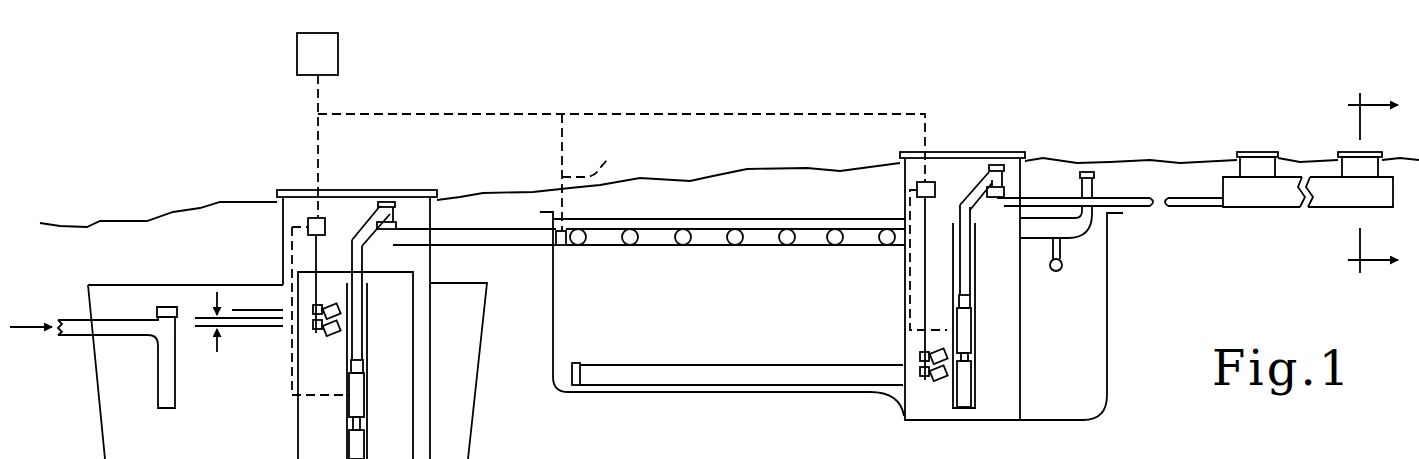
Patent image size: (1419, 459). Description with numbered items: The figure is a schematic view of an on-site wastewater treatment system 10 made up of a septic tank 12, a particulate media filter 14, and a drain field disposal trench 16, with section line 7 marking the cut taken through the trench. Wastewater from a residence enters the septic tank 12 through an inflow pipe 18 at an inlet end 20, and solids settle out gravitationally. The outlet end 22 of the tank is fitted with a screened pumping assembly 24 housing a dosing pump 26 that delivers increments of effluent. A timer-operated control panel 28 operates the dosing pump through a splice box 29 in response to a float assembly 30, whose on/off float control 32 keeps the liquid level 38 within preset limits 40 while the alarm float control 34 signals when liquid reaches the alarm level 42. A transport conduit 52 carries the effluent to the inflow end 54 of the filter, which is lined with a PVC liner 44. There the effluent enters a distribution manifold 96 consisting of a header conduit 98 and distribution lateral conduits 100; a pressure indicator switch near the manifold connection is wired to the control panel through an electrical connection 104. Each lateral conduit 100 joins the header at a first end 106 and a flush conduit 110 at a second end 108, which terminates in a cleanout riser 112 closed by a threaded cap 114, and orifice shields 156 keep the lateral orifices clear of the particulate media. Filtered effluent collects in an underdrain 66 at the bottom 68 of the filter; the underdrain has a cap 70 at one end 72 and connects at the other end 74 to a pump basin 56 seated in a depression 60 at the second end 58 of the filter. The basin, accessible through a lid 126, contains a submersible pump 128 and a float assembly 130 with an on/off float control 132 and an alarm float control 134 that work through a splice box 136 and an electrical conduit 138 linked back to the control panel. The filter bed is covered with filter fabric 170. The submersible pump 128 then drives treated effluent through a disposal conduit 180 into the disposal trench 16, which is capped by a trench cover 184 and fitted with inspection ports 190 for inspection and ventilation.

The section line 7- 7 is at (1364, 183).
The on-site wastewater treatment system 10 is at (512, 87).
The septic tank 12 is at (205, 195).
The particulate media filter 14 is at (712, 167).
The drain field disposal trench 16 is at (1265, 135).
The inflow pipe 18 is at (82, 335).
The inlet end 20 is at (88, 305).
The outlet end 22 is at (437, 283).
The screened pumping assembly 24 is at (430, 387).
The dosing pump 26 is at (360, 390).
The control panel 28 is at (338, 70).
The splice box 29 is at (328, 222).
The float assembly 30 is at (308, 230).
The on/off float control 32 is at (318, 332).
The alarm float control 34 is at (328, 318).
The liquid level 38 is at (198, 316).
The preset limits 40 is at (217, 340).
The alarm level 42 is at (260, 308).
The PVC liner 44 is at (552, 330).
The transport conduit 52 is at (470, 229).
The inflow end 54 is at (552, 283).
The pump basin 56 is at (1065, 352).
The second end 58 is at (1107, 323).
The depression 60 is at (1017, 423).
The underdrain 66 is at (782, 363).
The bottom 68 is at (747, 377).
The cap 70 is at (572, 370).
The one end 72 is at (587, 377).
The other end 74 is at (898, 375).
The distribution manifold 96 is at (588, 213).
The header conduit 98 is at (560, 243).
The distribution lateral conduit 100 is at (712, 245).
The electrical connection 104 is at (597, 172).
The first end 106 is at (567, 247).
The second end 108 is at (1035, 243).
The flush conduit 110 is at (1062, 265).
The cleanout riser 112 is at (1100, 198).
The threaded cap 114 is at (1088, 172).
The lid 126 is at (1008, 152).
The submersible pump 128 is at (967, 328).
The float assembly 130 is at (922, 260).
The on/off float control 132 is at (945, 383).
The alarm float control 134 is at (947, 350).
The splice box 136 is at (935, 188).
The electrical conduit 138 is at (865, 113).
The orifice shield 156 is at (845, 228).
The filter fabric 170 is at (848, 187).
The disposal conduit 180 is at (1213, 208).
The trench cover 184 is at (1357, 195).
The inspection port 190 is at (1340, 168).